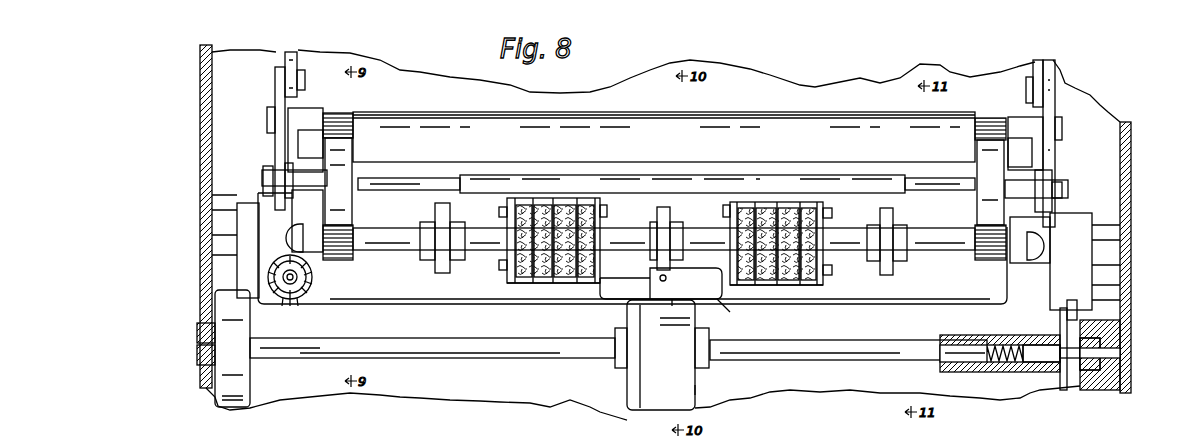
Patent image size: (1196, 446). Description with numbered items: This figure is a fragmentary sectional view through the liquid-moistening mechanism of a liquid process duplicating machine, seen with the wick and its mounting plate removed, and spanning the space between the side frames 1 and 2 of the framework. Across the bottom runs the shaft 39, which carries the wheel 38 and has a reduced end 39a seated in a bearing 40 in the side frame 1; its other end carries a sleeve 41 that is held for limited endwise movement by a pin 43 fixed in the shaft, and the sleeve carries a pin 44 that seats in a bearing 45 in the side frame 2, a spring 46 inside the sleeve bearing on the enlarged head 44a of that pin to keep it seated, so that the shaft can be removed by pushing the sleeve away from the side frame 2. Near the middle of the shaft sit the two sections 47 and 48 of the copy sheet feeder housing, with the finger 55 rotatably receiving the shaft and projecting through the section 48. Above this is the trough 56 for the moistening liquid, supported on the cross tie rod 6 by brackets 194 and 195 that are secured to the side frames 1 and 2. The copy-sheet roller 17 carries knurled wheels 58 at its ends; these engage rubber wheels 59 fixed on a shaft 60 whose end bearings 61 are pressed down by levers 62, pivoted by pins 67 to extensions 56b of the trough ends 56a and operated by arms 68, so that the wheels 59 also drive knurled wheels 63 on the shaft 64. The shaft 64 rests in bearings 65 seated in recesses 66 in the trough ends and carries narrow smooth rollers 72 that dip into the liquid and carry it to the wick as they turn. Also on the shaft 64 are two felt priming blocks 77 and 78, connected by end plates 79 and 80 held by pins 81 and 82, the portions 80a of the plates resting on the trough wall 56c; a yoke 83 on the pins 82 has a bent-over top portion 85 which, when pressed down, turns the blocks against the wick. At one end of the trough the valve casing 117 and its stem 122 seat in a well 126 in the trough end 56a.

The side frame 1 is at (200, 258).
The side frame 2 is at (1131, 288).
The cross tie rod 6 is at (1063, 179).
The roller 17 is at (728, 149).
The wheel 38 is at (215, 400).
The shaft 39 is at (478, 338).
The reduced end 39a is at (197, 332).
The bearing 40 is at (197, 356).
The sleeve 41 is at (958, 335).
The pin 43 is at (972, 354).
The pin 44 is at (1100, 352).
The enlarged head 44a is at (1040, 365).
The bearing 45 is at (1100, 365).
The spring 46 is at (1005, 362).
The housing section 47 is at (627, 379).
The housing section 48 is at (713, 384).
The finger 55 is at (680, 282).
The trough 56 is at (415, 299).
The trough end 56a is at (290, 256).
The extension 56b is at (305, 112).
The trough wall 56c is at (682, 190).
The knurled wheel 58 is at (345, 113).
The rubber wheel 59 is at (352, 160).
The shaft 60 is at (444, 178).
The bearing 61 is at (265, 168).
The lever 62 is at (1056, 84).
The knurled wheel 63 is at (345, 262).
The shaft 64 is at (388, 228).
The bearing 65 is at (305, 225).
The recess 66 is at (300, 230).
The pivot pin 67 is at (305, 78).
The arm 68 is at (291, 52).
The roller 72 is at (437, 210).
The priming block 77 is at (512, 283).
The priming block 78 is at (815, 285).
The end plate 79 is at (657, 224).
The end plate 80 is at (507, 226).
The end plate portion 80a is at (512, 198).
The pin 81 is at (499, 211).
The pin 82 is at (499, 265).
The yoke 83 is at (728, 306).
The bent over top portion 85 is at (648, 280).
The valve casing 117 is at (290, 284).
The stem 122 is at (294, 280).
The well 126 is at (283, 298).
The bracket 194 is at (246, 203).
The bracket 195 is at (1080, 251).